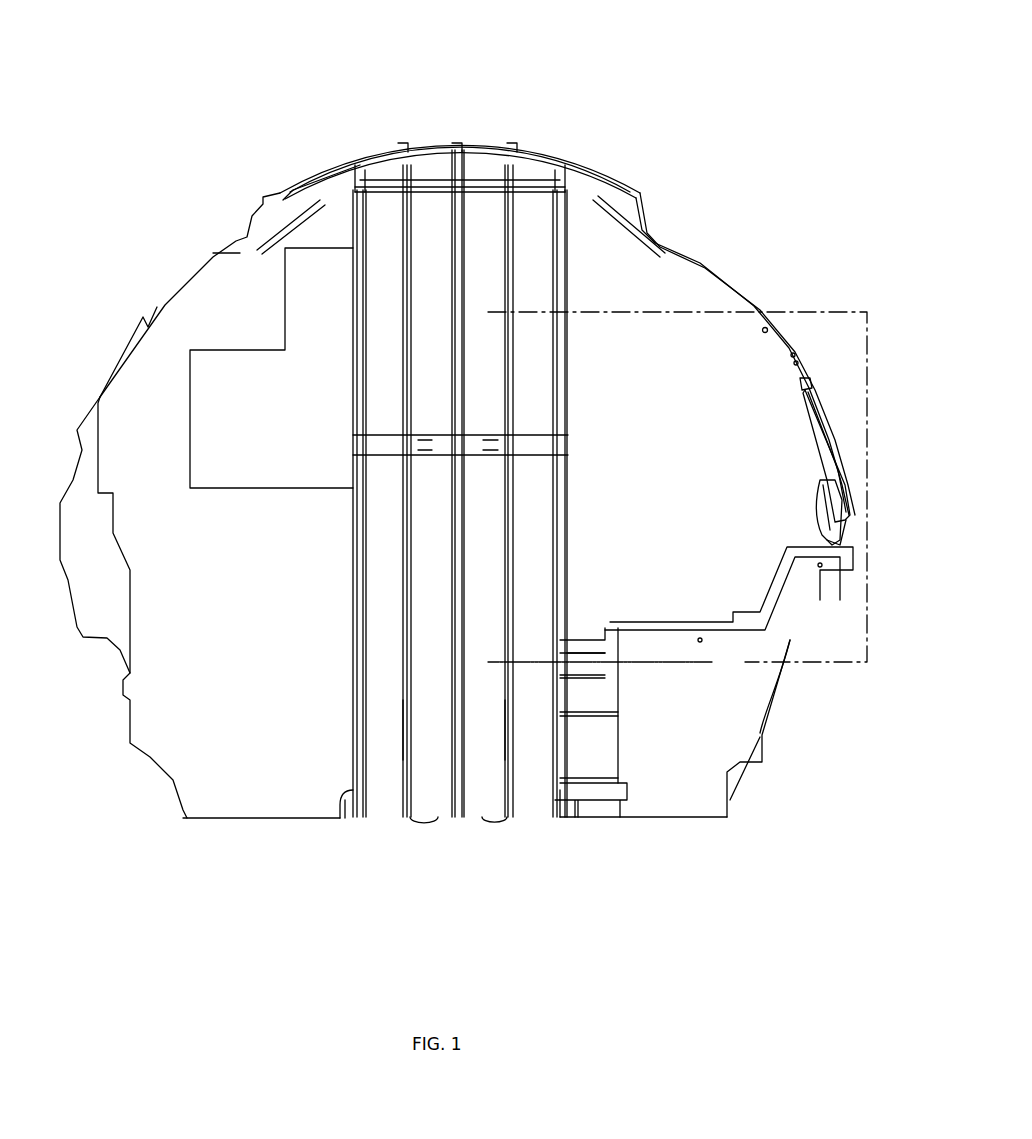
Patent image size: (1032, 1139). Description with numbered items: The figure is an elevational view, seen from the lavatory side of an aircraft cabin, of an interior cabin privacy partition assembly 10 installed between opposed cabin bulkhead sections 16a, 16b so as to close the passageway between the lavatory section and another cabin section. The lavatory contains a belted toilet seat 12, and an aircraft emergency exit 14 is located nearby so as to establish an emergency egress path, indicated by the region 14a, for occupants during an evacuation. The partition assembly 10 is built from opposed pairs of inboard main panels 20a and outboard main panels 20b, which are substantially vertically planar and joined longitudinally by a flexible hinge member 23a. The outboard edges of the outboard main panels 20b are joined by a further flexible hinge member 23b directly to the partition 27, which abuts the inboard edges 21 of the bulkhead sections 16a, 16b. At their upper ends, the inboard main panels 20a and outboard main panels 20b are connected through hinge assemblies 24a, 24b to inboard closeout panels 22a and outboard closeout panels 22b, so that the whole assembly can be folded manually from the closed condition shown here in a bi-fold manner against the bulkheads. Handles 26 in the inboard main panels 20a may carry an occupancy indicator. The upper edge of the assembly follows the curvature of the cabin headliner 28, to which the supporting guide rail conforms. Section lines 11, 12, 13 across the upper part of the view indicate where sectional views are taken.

The interior cabin privacy partition assembly 10 is at (925, 178).
The section line 11 is at (895, 210).
The belted toilet seat 12 is at (865, 223).
The section line 13 is at (823, 233).
The aircraft emergency exit 14 is at (837, 407).
The emergency egress path region 14a is at (733, 457).
The cabin bulkhead section 16a is at (555, 506).
The cabin bulkhead section 16b is at (206, 533).
The inboard main panel 20a is at (458, 486).
The outboard main panel 20b is at (460, 503).
The inboard edge of bulkhead partition 21 is at (365, 527).
The inboard closeout panel 22a is at (415, 163).
The outboard closeout panel 22b is at (520, 170).
The flexible hinge member 23a is at (400, 720).
The flexible hinge member 23b is at (352, 768).
The hinge assembly 24a is at (427, 187).
The hinge assembly 24b is at (382, 173).
The handle 26 is at (487, 455).
The partition 27 is at (560, 697).
The headliner 28 is at (590, 173).